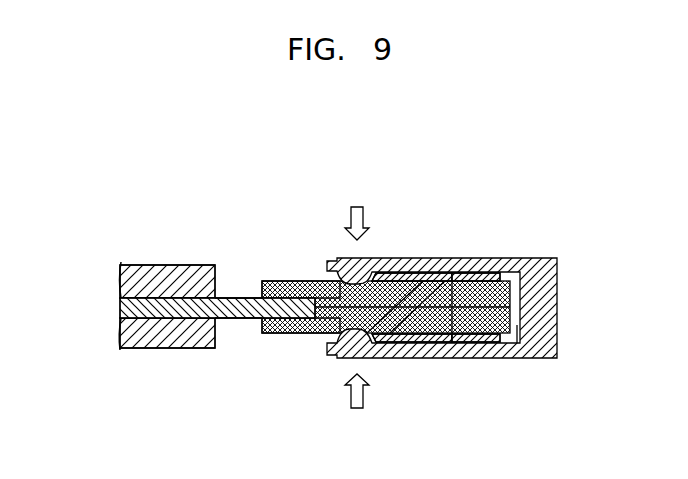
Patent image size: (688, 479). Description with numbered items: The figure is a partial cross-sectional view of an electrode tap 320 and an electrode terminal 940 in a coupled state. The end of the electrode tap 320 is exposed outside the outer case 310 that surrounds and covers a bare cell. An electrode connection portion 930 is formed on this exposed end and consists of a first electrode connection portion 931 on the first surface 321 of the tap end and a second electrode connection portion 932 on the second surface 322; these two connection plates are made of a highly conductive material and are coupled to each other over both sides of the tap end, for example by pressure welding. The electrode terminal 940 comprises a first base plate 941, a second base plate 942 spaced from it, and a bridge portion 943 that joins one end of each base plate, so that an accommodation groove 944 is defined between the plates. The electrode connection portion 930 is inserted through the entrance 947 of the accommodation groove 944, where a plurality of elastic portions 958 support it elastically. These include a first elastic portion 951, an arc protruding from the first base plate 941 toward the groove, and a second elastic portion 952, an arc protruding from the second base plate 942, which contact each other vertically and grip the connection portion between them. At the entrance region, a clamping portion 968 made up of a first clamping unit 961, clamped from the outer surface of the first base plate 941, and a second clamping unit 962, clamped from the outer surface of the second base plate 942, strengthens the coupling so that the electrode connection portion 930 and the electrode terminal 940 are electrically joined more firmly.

The outer case 310 is at (150, 274).
The electrode tap 320 is at (217, 306).
The first surface 321 is at (227, 297).
The second surface 322 is at (240, 318).
The electrode connection portion 930 is at (373, 275).
The first electrode connection portion 931 is at (272, 281).
The second electrode connection portion 932 is at (280, 333).
The electrode terminal 940 is at (452, 292).
The first base plate 941 is at (520, 268).
The second base plate 942 is at (463, 358).
The bridge portion 943 is at (557, 306).
The accommodation groove 944 is at (516, 326).
The entrance 947 is at (323, 344).
The first elastic portion 951 is at (472, 281).
The second elastic portion 952 is at (434, 281).
The elastic portions 958 is at (436, 251).
The first clamping unit 961 is at (331, 262).
The second clamping unit 962 is at (403, 252).
The clamping portion 968 is at (342, 213).